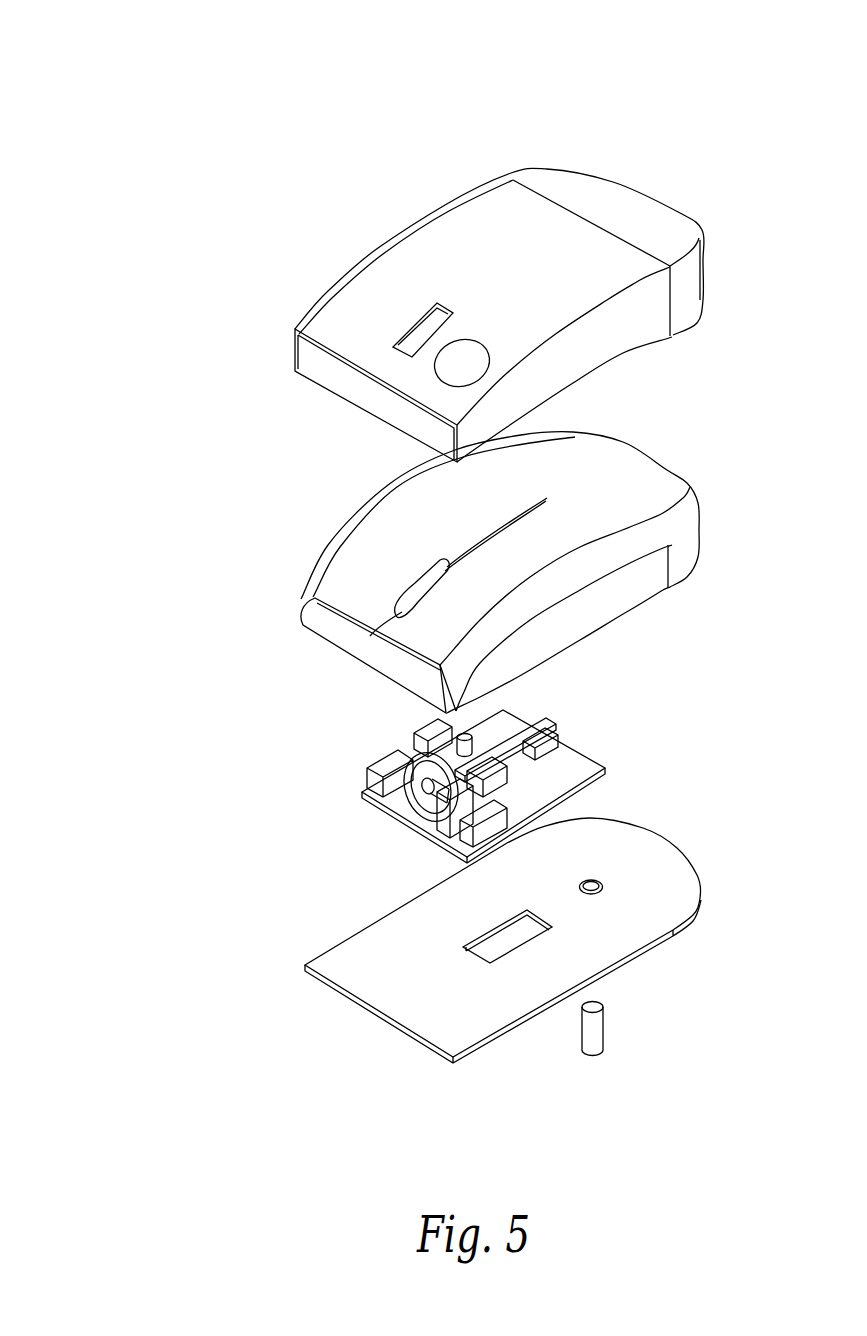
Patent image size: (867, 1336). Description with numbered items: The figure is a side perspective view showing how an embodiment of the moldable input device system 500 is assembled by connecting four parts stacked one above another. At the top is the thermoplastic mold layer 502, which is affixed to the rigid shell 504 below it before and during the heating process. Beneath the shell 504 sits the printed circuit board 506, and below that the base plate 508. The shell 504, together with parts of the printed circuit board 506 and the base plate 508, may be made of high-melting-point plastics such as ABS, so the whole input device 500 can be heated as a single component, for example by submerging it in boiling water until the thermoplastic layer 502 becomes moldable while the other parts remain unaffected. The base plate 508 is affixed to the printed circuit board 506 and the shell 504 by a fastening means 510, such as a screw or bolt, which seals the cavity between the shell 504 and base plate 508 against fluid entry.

The moldable input device system 500 is at (106, 74).
The thermoplastic mold layer 502 is at (298, 236).
The rigid shell 504 is at (264, 516).
The printed circuit board 506 is at (321, 755).
The base plate 508 is at (276, 921).
The fastening means 510 is at (627, 1039).